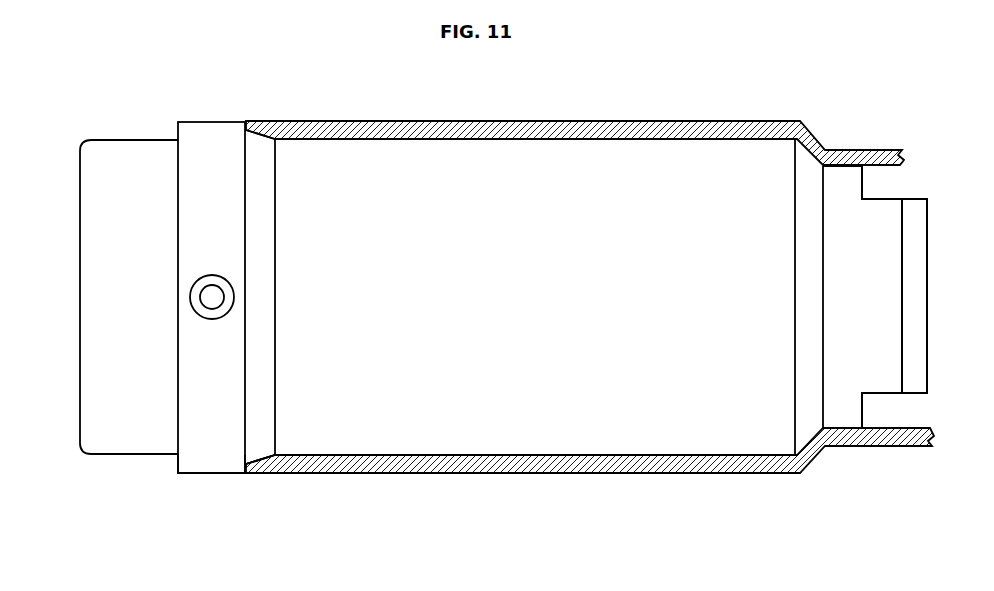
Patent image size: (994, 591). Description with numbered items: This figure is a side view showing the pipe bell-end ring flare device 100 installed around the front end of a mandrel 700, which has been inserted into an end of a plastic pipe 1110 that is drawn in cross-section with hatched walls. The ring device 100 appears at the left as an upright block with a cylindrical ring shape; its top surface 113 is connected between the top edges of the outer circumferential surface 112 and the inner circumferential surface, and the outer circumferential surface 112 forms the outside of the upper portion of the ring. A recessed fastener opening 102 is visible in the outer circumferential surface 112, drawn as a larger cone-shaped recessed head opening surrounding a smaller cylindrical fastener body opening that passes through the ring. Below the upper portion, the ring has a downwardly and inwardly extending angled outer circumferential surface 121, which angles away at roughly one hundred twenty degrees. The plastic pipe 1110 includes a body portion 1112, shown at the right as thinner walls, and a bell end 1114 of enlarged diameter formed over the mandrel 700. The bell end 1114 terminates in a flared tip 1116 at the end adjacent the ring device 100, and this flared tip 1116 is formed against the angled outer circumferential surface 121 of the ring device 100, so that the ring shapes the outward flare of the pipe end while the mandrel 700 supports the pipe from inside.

The mandrel 700 is at (140, 128).
The pipe bell-end ring flare device 100 is at (216, 113).
The recessed fastener opening 102 is at (189, 302).
The top surface 113 is at (178, 460).
The outer circumferential surface 112 is at (233, 473).
The angled outer circumferential surface 121 is at (251, 462).
The plastic pipe 1110 is at (691, 116).
The body portion 1112 is at (858, 155).
The bell end 1114 is at (483, 128).
The flared tip 1116 is at (264, 120).